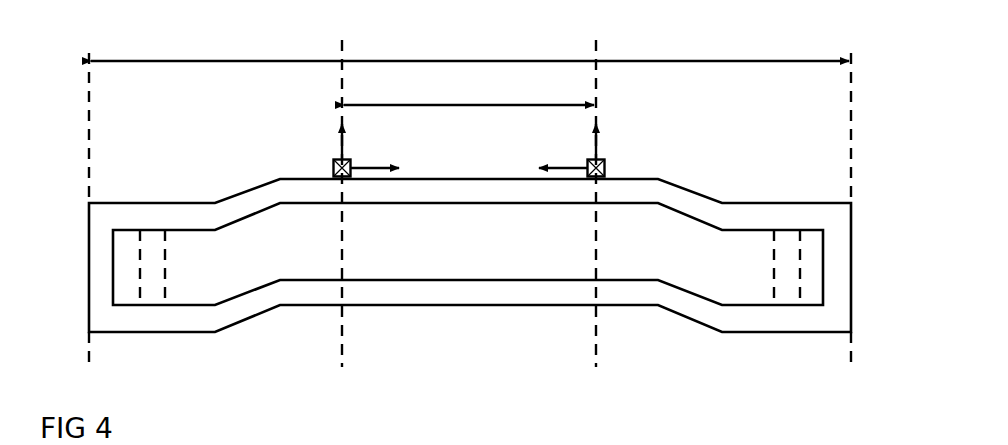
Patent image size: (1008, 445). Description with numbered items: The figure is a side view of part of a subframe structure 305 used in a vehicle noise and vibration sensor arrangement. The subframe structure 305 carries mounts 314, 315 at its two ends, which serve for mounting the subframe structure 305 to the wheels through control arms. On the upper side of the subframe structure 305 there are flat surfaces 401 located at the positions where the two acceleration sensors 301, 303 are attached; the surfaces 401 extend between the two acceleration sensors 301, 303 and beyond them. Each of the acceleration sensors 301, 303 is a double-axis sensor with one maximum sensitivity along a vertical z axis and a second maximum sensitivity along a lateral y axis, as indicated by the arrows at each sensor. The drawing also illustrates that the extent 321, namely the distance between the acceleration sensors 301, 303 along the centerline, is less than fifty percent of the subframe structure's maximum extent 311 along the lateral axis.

The subframe structure's maximum extent 311 is at (412, 61).
The extent of the virtual rectangle 321 is at (440, 105).
The acceleration sensor 301 is at (333, 164).
The acceleration sensor 303 is at (607, 163).
The flat surfaces 401 is at (331, 177).
The subframe structure 305 is at (765, 203).
The mount 314 is at (167, 262).
The mount 315 is at (773, 262).